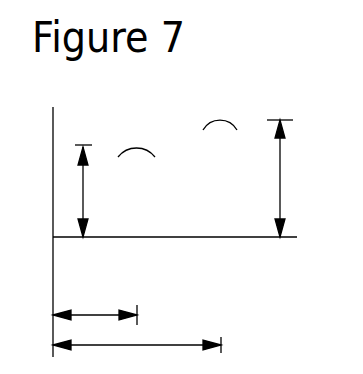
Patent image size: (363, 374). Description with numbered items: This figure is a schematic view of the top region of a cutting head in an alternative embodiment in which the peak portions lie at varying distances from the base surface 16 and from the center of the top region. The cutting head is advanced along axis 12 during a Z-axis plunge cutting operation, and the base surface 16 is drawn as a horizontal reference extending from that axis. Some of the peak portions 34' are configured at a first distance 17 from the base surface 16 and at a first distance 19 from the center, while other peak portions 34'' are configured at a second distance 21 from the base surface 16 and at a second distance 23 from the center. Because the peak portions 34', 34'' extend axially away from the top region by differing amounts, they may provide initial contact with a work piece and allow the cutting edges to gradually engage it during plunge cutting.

The axis 12 is at (53, 130).
The base surface 16 is at (181, 238).
The first distance 17 is at (83, 188).
The first distance 19 is at (88, 313).
The second distance 21 is at (280, 155).
The second distance 23 is at (181, 343).
The peak portions 34' is at (133, 128).
The peak portions 34'' is at (238, 99).